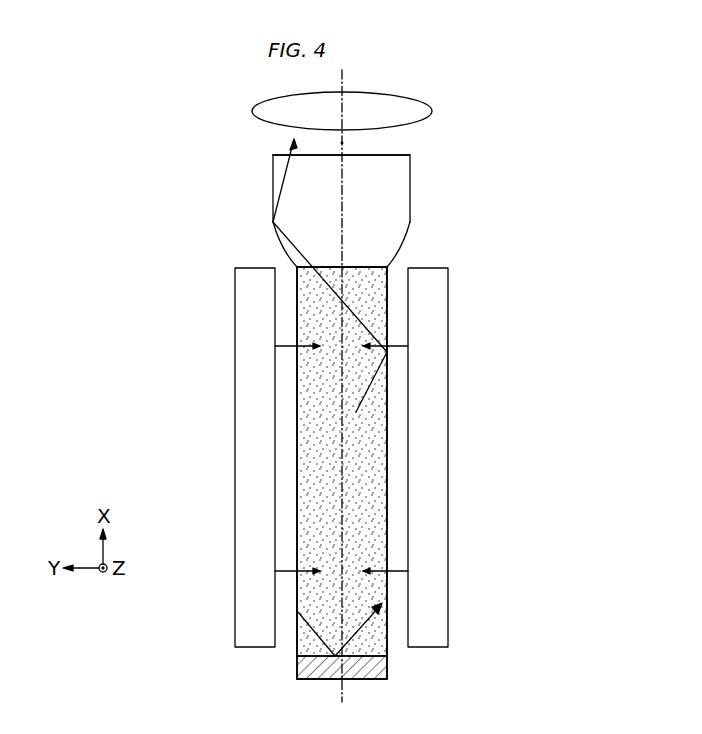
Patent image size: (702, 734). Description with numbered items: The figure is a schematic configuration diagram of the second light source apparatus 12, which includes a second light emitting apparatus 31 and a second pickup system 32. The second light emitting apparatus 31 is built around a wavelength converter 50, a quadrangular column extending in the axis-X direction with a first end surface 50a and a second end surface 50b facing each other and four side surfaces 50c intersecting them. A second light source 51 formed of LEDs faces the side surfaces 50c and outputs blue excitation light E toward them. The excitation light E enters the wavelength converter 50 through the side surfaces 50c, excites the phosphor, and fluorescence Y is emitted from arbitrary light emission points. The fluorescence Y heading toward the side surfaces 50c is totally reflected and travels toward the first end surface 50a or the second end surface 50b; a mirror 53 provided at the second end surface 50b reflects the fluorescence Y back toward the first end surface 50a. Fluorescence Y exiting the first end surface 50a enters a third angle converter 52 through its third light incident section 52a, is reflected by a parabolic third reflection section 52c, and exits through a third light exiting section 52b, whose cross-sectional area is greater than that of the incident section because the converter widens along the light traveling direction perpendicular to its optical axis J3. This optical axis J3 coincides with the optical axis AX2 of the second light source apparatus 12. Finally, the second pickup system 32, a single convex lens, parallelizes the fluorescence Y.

The second light source apparatus 12 is at (514, 173).
The second light emitting apparatus 31 is at (186, 264).
The second pickup system 32 is at (258, 106).
The optical axis of the second light source apparatus AX2 is at (344, 77).
The optical axis of the third angle converter J3 is at (344, 145).
The wavelength converter 50 is at (383, 527).
The first end surface 50a is at (372, 266).
The second end surface 50b is at (388, 670).
The side surfaces 50c is at (297, 508).
The second light source 51 is at (250, 412).
The third angle converter 52 is at (393, 180).
The third light incident section 52a is at (303, 272).
The third light exiting section 52b is at (285, 156).
The third reflection section 52c is at (276, 252).
The mirror 53 is at (297, 672).
The excitation light E is at (392, 347).
The fluorescence Y is at (284, 180).